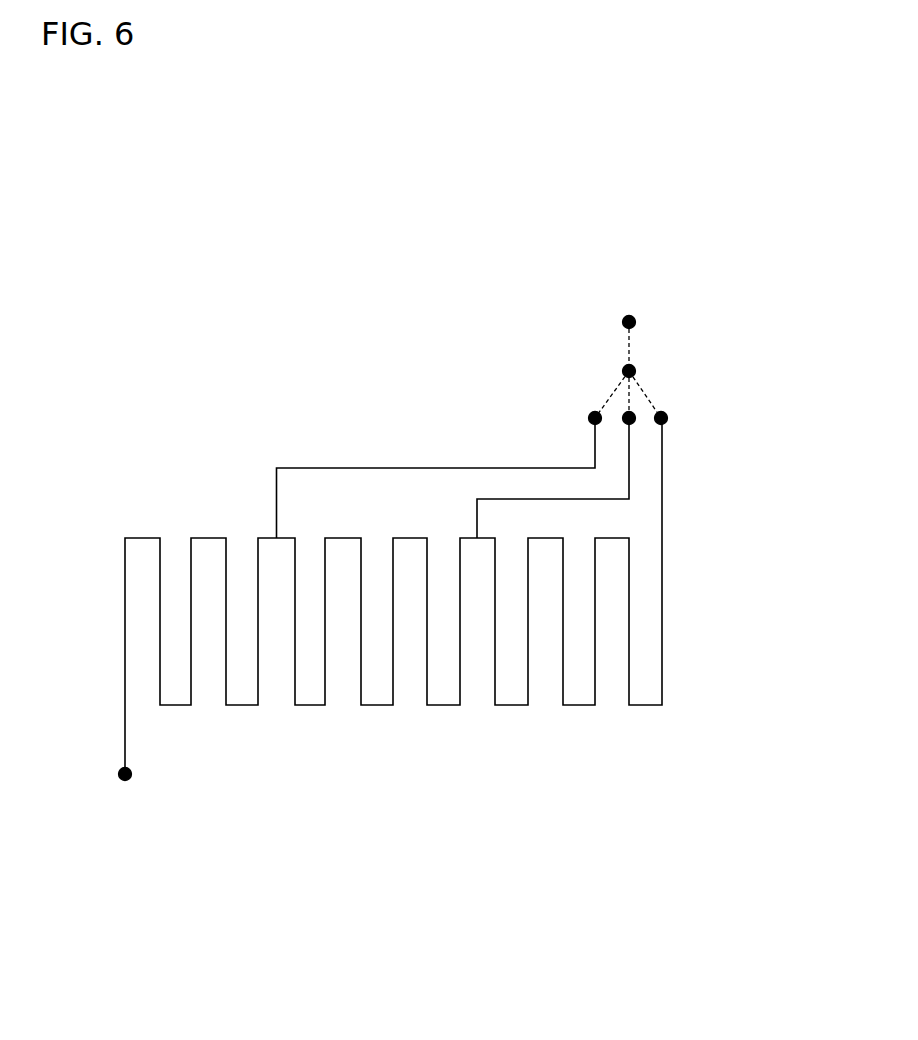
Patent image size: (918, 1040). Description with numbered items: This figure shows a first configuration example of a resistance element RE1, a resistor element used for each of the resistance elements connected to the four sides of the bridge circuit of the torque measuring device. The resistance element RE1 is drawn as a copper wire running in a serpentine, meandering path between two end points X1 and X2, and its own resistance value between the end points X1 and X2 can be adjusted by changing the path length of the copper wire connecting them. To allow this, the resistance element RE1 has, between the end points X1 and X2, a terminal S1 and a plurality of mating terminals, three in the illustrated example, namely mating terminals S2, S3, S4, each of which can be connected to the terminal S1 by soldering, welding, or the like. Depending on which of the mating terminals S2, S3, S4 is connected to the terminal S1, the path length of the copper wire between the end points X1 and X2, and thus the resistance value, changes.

The resistance element RE1 is at (375, 322).
The end point X1 is at (628, 316).
The end point X2 is at (122, 783).
The terminal S1 is at (637, 371).
The mating terminal S2 is at (590, 418).
The mating terminal S3 is at (624, 412).
The mating terminal S4 is at (668, 416).